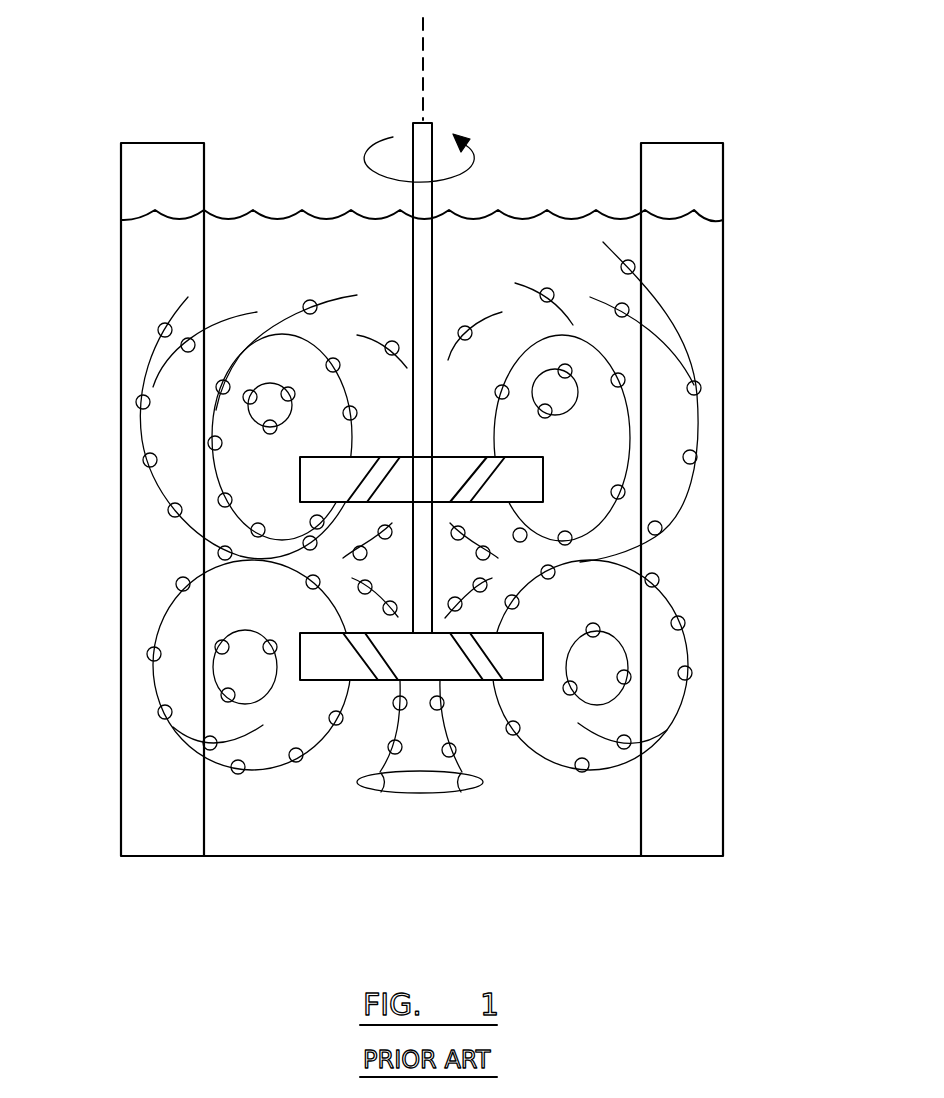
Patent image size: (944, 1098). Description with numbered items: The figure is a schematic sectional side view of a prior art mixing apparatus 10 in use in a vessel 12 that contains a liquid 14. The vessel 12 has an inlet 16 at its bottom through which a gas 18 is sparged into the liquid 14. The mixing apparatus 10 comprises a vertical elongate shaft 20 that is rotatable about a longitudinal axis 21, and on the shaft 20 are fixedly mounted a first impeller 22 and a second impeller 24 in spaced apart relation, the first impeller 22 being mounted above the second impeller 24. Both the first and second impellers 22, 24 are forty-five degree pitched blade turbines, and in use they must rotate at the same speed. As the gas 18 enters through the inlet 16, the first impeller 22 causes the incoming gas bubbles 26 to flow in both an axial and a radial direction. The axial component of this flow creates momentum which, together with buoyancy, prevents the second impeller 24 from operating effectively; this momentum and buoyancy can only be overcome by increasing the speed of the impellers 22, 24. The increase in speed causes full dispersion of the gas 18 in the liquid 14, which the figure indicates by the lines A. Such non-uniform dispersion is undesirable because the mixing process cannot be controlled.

The mixing apparatus 10 is at (486, 438).
The vessel 12 is at (723, 553).
The liquid 14 is at (605, 817).
The inlet 16 is at (437, 785).
The gas 18 is at (688, 673).
The vertical elongate shaft 20 is at (425, 135).
The longitudinal axis 21 is at (422, 68).
The first impeller 22 is at (315, 663).
The second impeller 24 is at (315, 480).
The gas bubbles 26 is at (468, 752).
The lines A is at (698, 414).